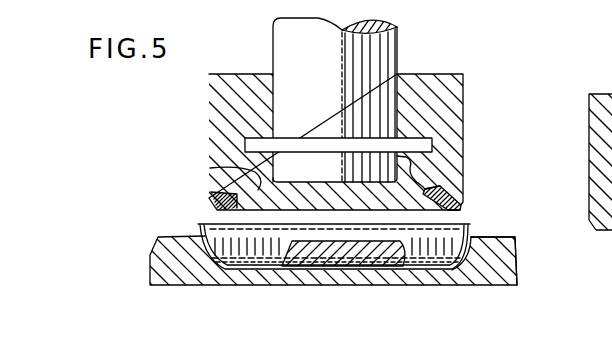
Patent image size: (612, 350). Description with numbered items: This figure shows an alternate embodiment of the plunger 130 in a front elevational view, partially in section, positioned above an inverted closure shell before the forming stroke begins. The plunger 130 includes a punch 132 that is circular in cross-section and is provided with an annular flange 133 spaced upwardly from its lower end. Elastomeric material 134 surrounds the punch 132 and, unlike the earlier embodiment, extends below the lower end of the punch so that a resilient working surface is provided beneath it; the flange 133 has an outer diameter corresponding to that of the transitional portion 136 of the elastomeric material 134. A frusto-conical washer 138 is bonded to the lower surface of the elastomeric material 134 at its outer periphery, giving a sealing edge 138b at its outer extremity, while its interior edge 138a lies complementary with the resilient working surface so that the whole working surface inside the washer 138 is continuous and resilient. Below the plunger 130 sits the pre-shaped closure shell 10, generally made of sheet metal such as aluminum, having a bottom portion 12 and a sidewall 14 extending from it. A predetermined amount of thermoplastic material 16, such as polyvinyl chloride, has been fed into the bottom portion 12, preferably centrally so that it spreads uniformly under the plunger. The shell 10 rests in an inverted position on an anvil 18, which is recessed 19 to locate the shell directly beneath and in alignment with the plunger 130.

The plunger 130 is at (416, 48).
The punch 132 is at (345, 91).
The annular flange 133 is at (432, 140).
The elastomeric material 134 is at (450, 113).
The transitional portion 136 is at (210, 166).
The washer 138 is at (446, 190).
The interior edge 138a is at (440, 173).
The sealing edge 138b is at (456, 206).
The closure shell 10 is at (477, 228).
The bottom portion 12 is at (421, 268).
The sidewall 14 is at (515, 280).
The thermoplastic material 16 is at (345, 259).
The anvil 18 is at (503, 251).
The recess 19 is at (476, 258).